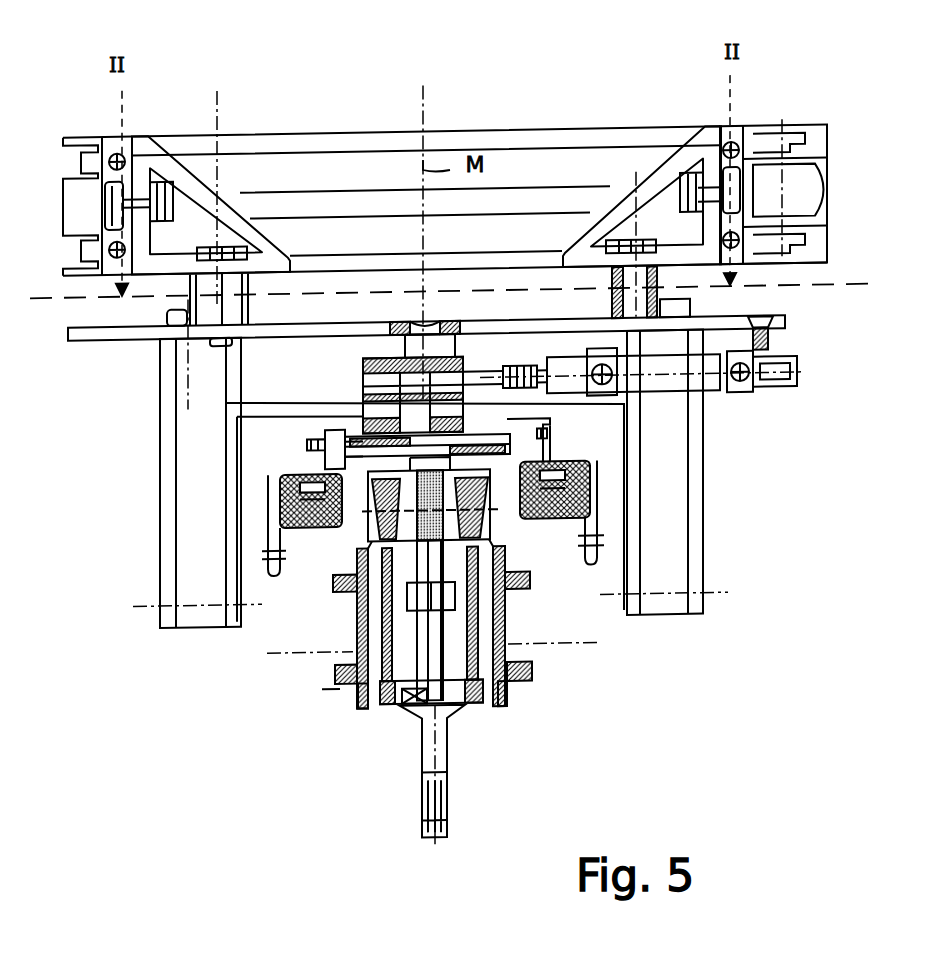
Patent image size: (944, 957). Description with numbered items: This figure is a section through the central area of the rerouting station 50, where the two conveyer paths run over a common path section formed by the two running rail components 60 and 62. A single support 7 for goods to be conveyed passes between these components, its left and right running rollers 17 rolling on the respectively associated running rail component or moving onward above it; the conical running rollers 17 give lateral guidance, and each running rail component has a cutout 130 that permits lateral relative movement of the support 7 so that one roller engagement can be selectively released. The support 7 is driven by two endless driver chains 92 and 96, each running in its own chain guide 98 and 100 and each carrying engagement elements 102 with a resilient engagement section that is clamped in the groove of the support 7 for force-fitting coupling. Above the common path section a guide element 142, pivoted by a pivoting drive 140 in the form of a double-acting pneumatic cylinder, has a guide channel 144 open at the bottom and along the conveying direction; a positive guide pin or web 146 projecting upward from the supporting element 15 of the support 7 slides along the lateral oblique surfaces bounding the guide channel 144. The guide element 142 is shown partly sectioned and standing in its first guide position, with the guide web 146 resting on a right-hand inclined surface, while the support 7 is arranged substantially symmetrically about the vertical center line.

The rerouting station 50 is at (500, 98).
The support for goods to be conveyed 7 is at (440, 728).
The supporting element 15 is at (372, 490).
The running roller 17 is at (397, 527).
The running rail component 60 is at (360, 684).
The running rail component 62 is at (510, 677).
The driver chain 92 is at (292, 470).
The driver chain 96 is at (575, 456).
The chain guide 98 is at (276, 505).
The chain guide 100 is at (590, 487).
The engagement element 102 is at (355, 430).
The cutout 130 is at (357, 593).
The pivoting drive 140 is at (693, 385).
The guide element 142 is at (460, 322).
The guide channel 144 is at (365, 378).
The positive guide pin or web 146 is at (490, 371).